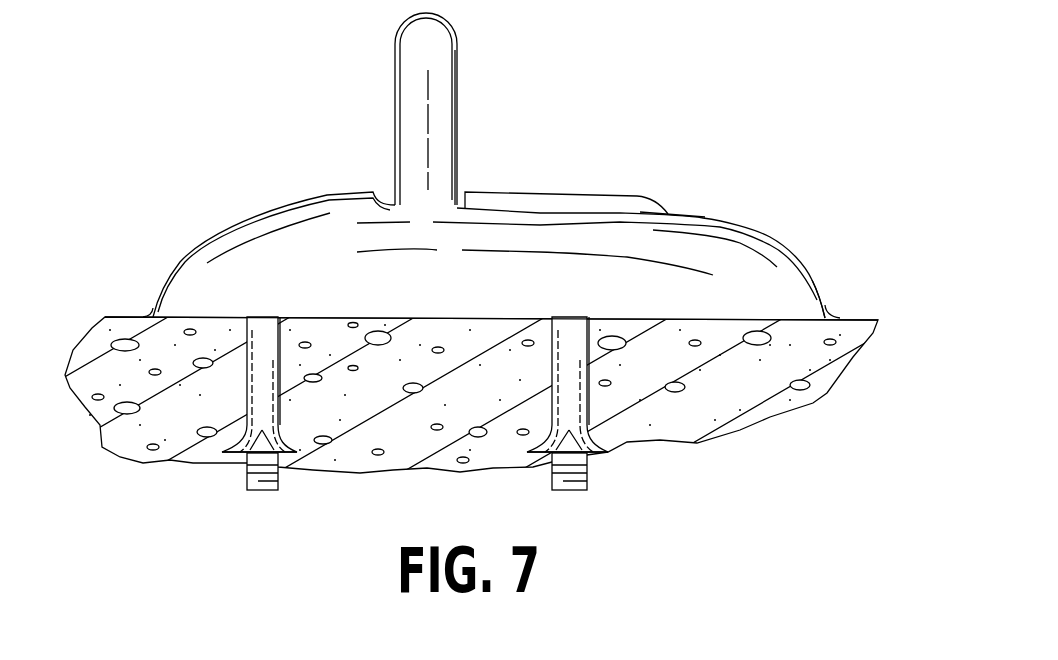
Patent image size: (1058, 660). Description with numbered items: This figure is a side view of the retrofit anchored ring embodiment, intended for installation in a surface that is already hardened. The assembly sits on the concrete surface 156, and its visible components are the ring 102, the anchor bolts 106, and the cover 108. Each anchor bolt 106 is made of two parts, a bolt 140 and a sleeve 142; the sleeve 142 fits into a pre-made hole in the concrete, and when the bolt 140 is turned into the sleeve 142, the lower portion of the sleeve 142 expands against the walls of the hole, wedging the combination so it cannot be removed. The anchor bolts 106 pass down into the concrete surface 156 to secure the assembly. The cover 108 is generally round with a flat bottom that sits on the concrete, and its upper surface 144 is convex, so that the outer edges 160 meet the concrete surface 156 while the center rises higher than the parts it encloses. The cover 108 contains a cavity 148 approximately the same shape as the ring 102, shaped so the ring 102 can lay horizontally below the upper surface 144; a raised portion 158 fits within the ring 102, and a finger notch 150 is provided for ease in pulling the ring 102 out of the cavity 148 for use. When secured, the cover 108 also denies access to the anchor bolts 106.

The ring 102 is at (457, 118).
The anchor bolts 106 is at (246, 379).
The cover 108 is at (245, 218).
The bolt 140 is at (280, 477).
The sleeve 142 is at (282, 417).
The upper surface 144 is at (783, 240).
The cavity 148 is at (705, 217).
The finger notch 150 is at (823, 292).
The concrete surface 156 is at (753, 398).
The raised portion 158 is at (600, 195).
The outer edges 160 is at (838, 313).